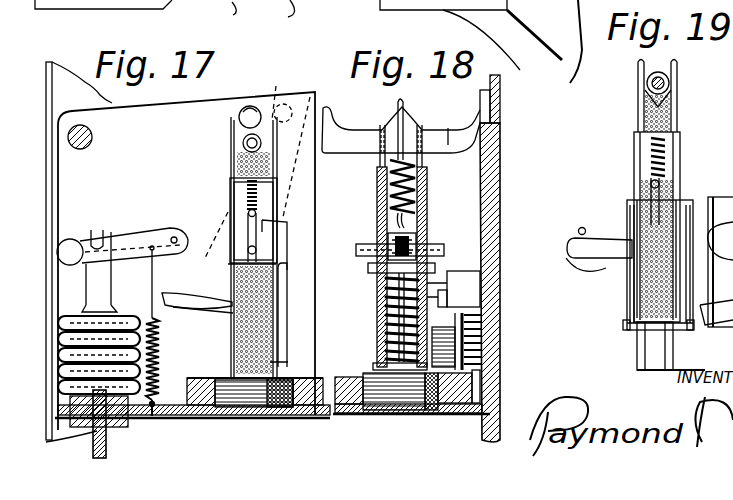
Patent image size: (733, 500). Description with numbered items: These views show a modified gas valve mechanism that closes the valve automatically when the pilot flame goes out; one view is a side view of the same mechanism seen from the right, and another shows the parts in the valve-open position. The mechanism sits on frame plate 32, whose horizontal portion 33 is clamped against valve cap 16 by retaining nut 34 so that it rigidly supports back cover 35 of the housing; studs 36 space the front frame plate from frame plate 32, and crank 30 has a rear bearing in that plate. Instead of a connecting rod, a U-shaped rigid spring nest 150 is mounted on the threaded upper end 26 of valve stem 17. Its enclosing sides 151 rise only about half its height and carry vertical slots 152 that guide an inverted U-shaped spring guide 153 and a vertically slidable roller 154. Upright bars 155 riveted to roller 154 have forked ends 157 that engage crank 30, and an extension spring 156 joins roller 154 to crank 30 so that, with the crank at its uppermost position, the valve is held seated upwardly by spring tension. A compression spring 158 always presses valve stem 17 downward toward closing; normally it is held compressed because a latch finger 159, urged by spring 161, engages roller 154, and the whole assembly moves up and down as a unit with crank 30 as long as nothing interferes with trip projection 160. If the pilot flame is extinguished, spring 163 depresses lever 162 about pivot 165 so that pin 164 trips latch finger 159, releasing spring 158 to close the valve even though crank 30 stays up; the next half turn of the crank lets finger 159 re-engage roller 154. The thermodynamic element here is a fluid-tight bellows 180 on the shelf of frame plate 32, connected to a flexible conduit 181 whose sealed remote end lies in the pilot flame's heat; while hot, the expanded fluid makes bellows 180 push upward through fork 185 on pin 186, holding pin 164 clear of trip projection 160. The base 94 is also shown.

In FIG. 17, the valve cap 16 is at (240, 416).
In FIG. 18, the valve cap 16 is at (390, 402).
In FIG. 19, the valve cap 16 is at (637, 371).
In FIG. 19, the valve stem 17 is at (647, 345).
In FIG. 17, the upper end of valve stem 26 is at (290, 360).
In FIG. 18, the upper end of valve stem 26 is at (386, 340).
In FIG. 17, the crank 30 is at (243, 112).
In FIG. 18, the crank 30 is at (452, 118).
In FIG. 17, the frame plate 32 is at (180, 267).
In FIG. 17, the horizontal portion 33 is at (317, 406).
In FIG. 18, the horizontal portion 33 is at (475, 410).
In FIG. 17, the retaining nut 34 is at (173, 414).
In FIG. 17, the back cover 35 is at (58, 88).
In FIG. 17, the studs 36 is at (92, 136).
In FIG. 18, the base 94 is at (342, 417).
In FIG. 18, the spring nest 150 is at (375, 250).
In FIG. 17, the enclosing sides 151 is at (268, 262).
In FIG. 18, the enclosing sides 151 is at (401, 268).
In FIG. 17, the vertical slots 152 is at (258, 222).
In FIG. 18, the vertical slots 152 is at (424, 205).
In FIG. 19, the vertical slots 152 is at (655, 146).
In FIG. 17, the spring guide 153 is at (228, 275).
In FIG. 19, the spring guide 153 is at (634, 183).
In FIG. 17, the roller 154 is at (262, 252).
In FIG. 18, the roller 154 is at (422, 231).
In FIG. 19, the roller 154 is at (680, 160).
In FIG. 17, the upright bars 155 is at (215, 148).
In FIG. 18, the upright bars 155 is at (406, 128).
In FIG. 19, the upright bars 155 is at (646, 99).
In FIG. 17, the extension spring 156 is at (232, 170).
In FIG. 19, the extension spring 156 is at (640, 121).
In FIG. 17, the forked ends 157 is at (242, 130).
In FIG. 19, the forked ends 157 is at (646, 75).
In FIG. 17, the compression spring 158 is at (192, 352).
In FIG. 18, the compression spring 158 is at (386, 296).
In FIG. 19, the compression spring 158 is at (593, 284).
In FIG. 17, the latch finger 159 is at (231, 240).
In FIG. 18, the latch finger 159 is at (435, 250).
In FIG. 19, the latch finger 159 is at (637, 160).
In FIG. 17, the trip projection 160 is at (213, 330).
In FIG. 19, the trip projection 160 is at (592, 258).
In FIG. 18, the spring 161 is at (482, 290).
In FIG. 19, the spring 161 is at (705, 284).
In FIG. 17, the lever 162 is at (128, 228).
In FIG. 18, the lever 162 is at (482, 300).
In FIG. 17, the spring 163 is at (217, 375).
In FIG. 18, the spring 163 is at (482, 350).
In FIG. 17, the pin 164 is at (172, 237).
In FIG. 19, the pin 164 is at (595, 220).
In FIG. 17, the pivot 165 is at (62, 240).
In FIG. 18, the pivot 165 is at (482, 322).
In FIG. 17, the bellows 180 is at (100, 322).
In FIG. 18, the bellows 180 is at (482, 373).
In FIG. 17, the conduit 181 is at (93, 445).
In FIG. 17, the fork 185 is at (103, 289).
In FIG. 17, the pin 186 is at (99, 232).